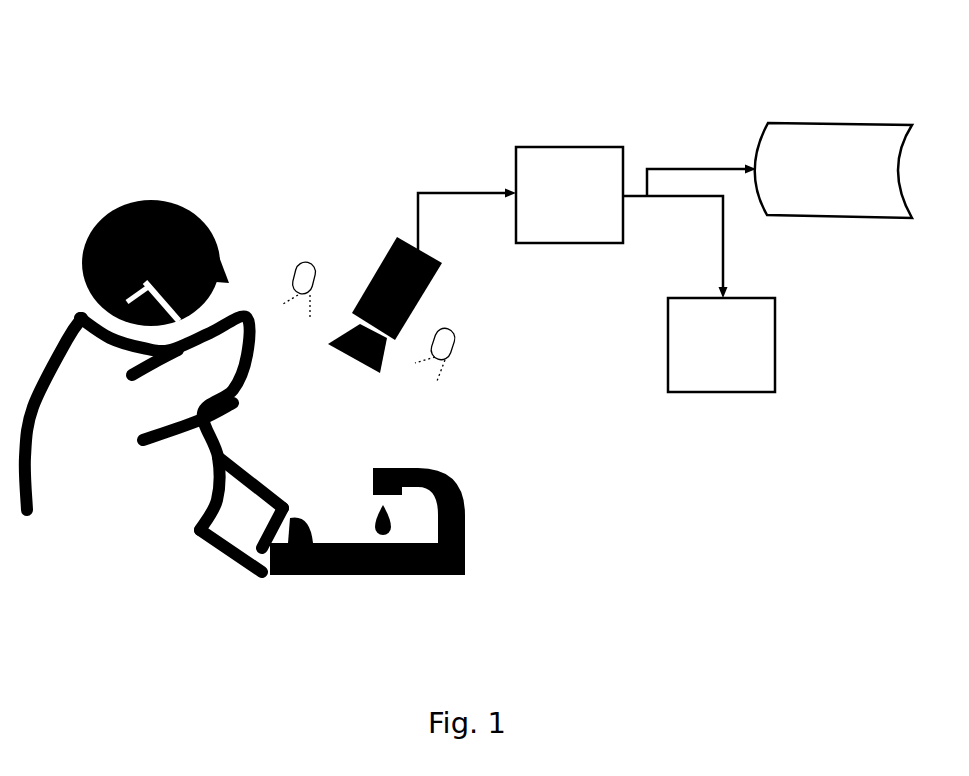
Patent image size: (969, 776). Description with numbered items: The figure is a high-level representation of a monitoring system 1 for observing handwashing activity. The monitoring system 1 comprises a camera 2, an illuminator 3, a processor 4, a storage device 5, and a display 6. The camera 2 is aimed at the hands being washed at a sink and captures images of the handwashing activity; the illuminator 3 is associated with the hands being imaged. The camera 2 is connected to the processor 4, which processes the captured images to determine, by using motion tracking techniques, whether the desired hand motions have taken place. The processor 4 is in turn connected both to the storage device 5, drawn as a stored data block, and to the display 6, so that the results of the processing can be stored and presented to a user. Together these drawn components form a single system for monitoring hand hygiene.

The monitoring system 1 is at (812, 103).
The camera 2 is at (366, 271).
The illuminator 3 is at (298, 330).
The processor 4 is at (581, 146).
The storage device 5 is at (860, 219).
The display 6 is at (730, 393).